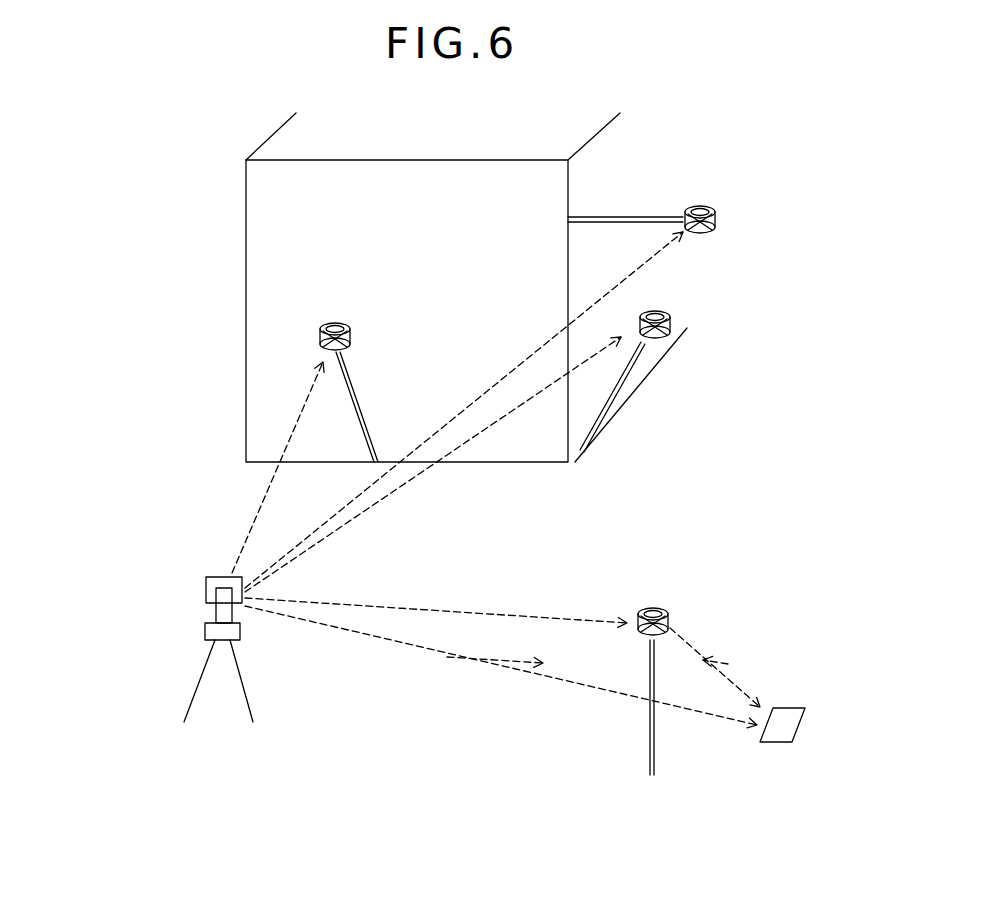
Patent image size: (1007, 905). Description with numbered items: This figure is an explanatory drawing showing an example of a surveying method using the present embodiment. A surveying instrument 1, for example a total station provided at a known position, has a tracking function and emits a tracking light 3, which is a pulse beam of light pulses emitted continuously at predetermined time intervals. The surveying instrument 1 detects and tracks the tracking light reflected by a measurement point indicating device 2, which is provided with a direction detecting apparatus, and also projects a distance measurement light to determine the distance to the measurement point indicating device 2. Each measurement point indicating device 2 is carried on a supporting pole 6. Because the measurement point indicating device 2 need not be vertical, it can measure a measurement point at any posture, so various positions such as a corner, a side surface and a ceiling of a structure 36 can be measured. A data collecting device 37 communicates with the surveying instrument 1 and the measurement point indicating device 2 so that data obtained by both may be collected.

The surveying instrument 1 is at (212, 573).
The measurement point indicating device 2 is at (337, 318).
The tracking light 3 is at (495, 612).
The supporting pole 6 is at (628, 217).
The structure 36 is at (246, 263).
The data collecting device 37 is at (790, 708).